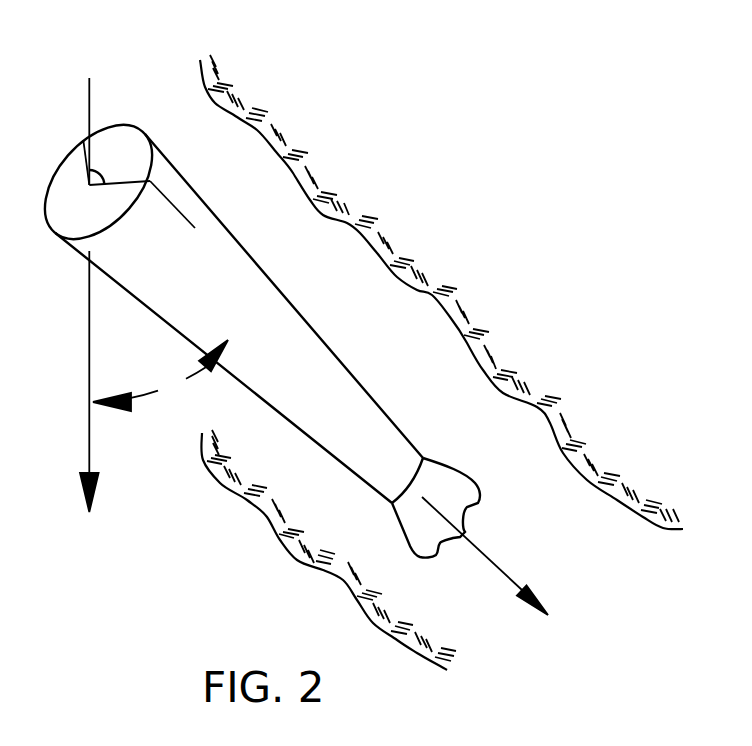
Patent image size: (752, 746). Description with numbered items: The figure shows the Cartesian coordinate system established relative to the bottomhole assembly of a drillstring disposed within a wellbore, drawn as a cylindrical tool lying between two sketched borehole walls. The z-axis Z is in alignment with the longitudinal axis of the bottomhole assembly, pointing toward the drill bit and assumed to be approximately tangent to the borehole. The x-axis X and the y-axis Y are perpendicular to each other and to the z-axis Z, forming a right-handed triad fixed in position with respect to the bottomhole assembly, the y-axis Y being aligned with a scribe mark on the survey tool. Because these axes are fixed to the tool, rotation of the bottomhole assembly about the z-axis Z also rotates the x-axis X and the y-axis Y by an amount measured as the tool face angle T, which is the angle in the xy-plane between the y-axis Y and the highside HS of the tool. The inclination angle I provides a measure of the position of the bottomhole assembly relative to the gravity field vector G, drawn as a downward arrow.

The highside HS is at (87, 244).
The gravity field vector G is at (95, 530).
The x-axis X is at (70, 142).
The y-axis Y is at (171, 211).
The z-axis Z is at (509, 577).
The tool face angle T is at (119, 162).
The inclination angle I is at (160, 377).